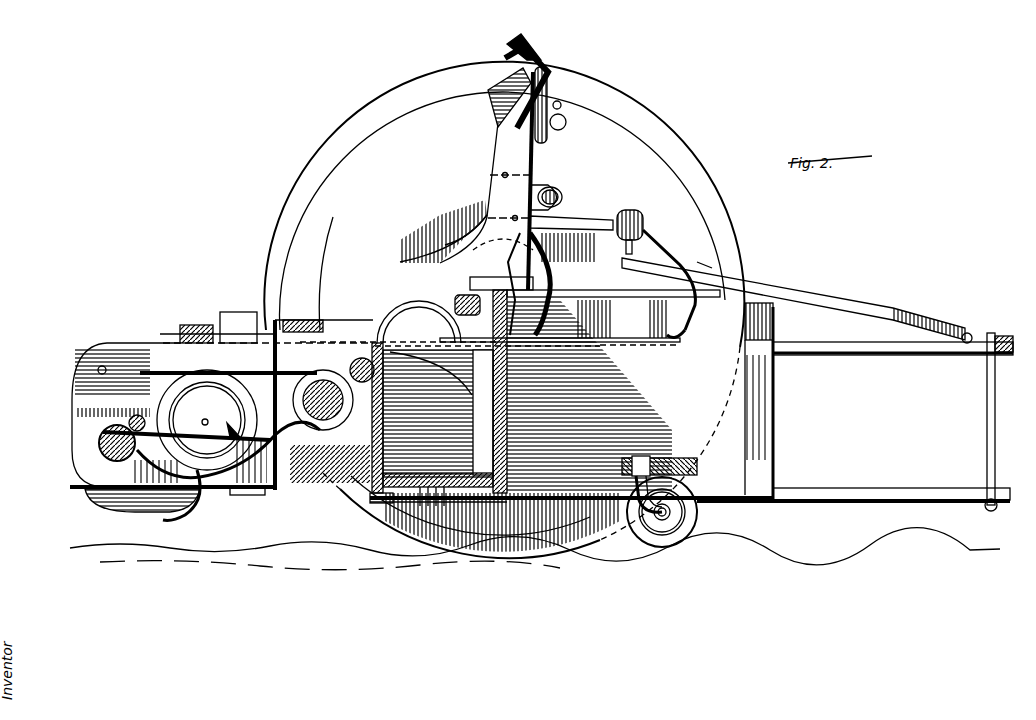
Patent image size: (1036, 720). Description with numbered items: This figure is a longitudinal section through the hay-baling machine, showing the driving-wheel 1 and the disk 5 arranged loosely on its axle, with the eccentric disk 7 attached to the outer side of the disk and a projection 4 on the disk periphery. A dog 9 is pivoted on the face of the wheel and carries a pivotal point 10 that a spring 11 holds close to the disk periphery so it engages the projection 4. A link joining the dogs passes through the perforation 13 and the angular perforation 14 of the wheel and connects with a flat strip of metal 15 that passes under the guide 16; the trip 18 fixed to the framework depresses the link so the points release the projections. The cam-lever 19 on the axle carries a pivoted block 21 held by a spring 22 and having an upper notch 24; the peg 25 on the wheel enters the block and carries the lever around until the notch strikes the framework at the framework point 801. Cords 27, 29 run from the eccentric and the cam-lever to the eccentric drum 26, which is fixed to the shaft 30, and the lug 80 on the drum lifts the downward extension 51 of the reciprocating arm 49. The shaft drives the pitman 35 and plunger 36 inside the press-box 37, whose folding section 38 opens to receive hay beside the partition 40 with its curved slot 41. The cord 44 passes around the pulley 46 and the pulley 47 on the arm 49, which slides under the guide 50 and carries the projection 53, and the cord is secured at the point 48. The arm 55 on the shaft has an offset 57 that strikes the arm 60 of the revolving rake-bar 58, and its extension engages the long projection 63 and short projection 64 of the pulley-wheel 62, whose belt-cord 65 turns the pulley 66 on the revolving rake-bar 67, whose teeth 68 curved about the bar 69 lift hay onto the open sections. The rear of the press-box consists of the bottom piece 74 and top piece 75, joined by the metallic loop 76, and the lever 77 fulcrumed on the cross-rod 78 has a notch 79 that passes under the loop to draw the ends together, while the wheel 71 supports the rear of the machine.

The driving-wheel 1 is at (504, 310).
The projection 4 is at (555, 250).
The disk 5 is at (447, 248).
The eccentric disk 7 is at (570, 277).
The dog 9 is at (565, 222).
The point 10 is at (478, 228).
The spring 11 is at (562, 196).
The perforation 13 is at (620, 245).
The angular perforation 14 is at (688, 337).
The flat strip of metal 15 is at (668, 262).
The guide 16 is at (697, 265).
The trip 18 is at (775, 322).
The cam-lever 19 is at (493, 178).
The pivoted block 21 is at (512, 52).
The spring 22 is at (568, 124).
The notch 24 is at (500, 72).
The peg 25 is at (562, 108).
The eccentric drum 26 is at (90, 375).
The cord 27 is at (170, 343).
The cord 29 is at (200, 495).
The shaft 30 is at (103, 427).
The pitman 35 is at (440, 420).
The plunger 36 is at (445, 391).
The press-box 37 is at (640, 350).
The folding section 38 is at (370, 513).
The partition 40 is at (538, 420).
The curved slot 41 is at (620, 345).
The cord 44 is at (560, 345).
The pulley 46 is at (685, 305).
The pulley 47 is at (455, 303).
The point 48 is at (655, 318).
The reciprocating arm 49 is at (400, 335).
The guide 50 is at (503, 248).
The downward extension 51 is at (433, 372).
The projection 53 is at (388, 330).
The arm 55 is at (194, 415).
The offset 57 is at (186, 438).
The revolving rake-bar 58 is at (103, 443).
The arm 60 is at (190, 385).
The pulley-wheel 62 is at (207, 420).
The long projection 63 is at (255, 495).
The short projection 64 is at (250, 373).
The belt-cord 65 is at (297, 373).
The pulley 66 is at (340, 385).
The revolving rake-bar 67 is at (229, 450).
The teeth 68 is at (374, 300).
The bar 69 is at (357, 353).
The wheel 71 is at (700, 522).
The bottom piece 74 is at (845, 490).
The top piece 75 is at (830, 356).
The metallic loop 76 is at (996, 390).
The lever 77 is at (818, 298).
The cross-rod 78 is at (968, 335).
The notch 79 is at (1000, 340).
The lug 80 is at (100, 368).
The block 801 is at (250, 312).